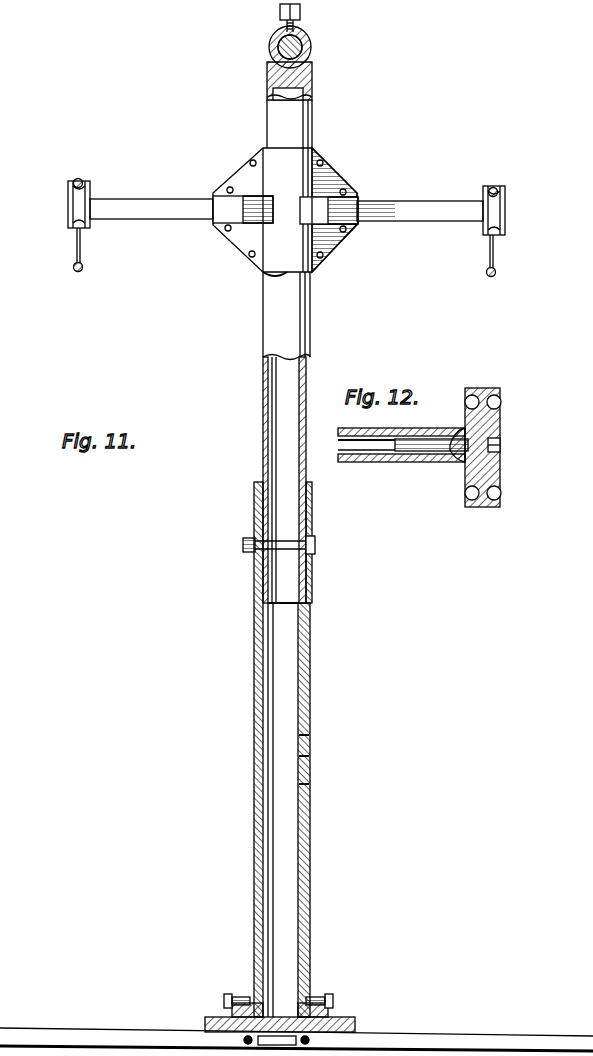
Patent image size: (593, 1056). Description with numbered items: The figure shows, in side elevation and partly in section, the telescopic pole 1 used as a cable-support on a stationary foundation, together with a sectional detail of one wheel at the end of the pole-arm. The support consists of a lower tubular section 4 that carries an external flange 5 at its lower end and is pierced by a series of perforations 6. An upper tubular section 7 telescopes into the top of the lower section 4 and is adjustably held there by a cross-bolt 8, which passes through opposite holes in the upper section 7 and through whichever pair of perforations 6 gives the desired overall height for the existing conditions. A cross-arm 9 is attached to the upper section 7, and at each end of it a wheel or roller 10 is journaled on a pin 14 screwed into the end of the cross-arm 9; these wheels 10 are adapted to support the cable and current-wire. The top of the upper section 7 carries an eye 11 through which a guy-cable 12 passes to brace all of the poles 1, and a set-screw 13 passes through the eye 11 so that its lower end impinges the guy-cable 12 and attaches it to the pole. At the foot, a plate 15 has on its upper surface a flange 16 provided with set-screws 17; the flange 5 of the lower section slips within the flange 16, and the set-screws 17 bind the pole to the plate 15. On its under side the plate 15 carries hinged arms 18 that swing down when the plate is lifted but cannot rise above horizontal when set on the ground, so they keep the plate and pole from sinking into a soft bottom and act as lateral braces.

In FIG. 11, the pole 1 is at (285, 372).
In FIG. 11, the lower tubular section 4 is at (310, 696).
In FIG. 11, the external flange 5 is at (330, 1017).
In FIG. 11, the perforations 6 is at (310, 784).
In FIG. 11, the upper tubular section 7 is at (263, 410).
In FIG. 11, the cross-bolt 8 is at (243, 545).
In FIG. 11, the cross-arm 9 is at (180, 202).
In FIG. 12, the cross-arm 9 is at (369, 462).
In FIG. 11, the wheel or roller 10 is at (68, 210).
In FIG. 12, the wheel or roller 10 is at (488, 398).
In FIG. 11, the eye 11 is at (312, 45).
In FIG. 11, the guy-cable 12 is at (308, 54).
In FIG. 11, the set-screw 13 is at (280, 12).
In FIG. 12, the pin 14 is at (500, 457).
In FIG. 11, the plate 15 is at (225, 1017).
In FIG. 11, the flange 16 is at (322, 994).
In FIG. 11, the set-screws 17 is at (228, 994).
In FIG. 11, the hinged arms 18 is at (75, 1033).